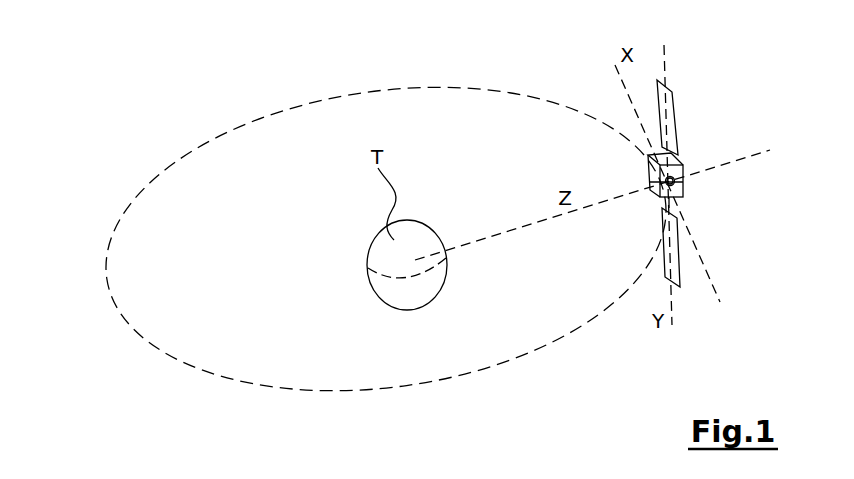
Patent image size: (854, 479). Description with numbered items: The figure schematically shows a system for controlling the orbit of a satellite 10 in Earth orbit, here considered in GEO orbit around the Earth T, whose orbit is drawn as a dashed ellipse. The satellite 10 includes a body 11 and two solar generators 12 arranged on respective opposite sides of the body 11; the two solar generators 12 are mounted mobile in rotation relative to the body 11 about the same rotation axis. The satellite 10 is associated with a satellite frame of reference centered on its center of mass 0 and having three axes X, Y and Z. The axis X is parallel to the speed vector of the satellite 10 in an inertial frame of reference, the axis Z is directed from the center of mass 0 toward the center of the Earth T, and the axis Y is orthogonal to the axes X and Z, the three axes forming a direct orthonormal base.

The satellite 10 is at (707, 199).
The body 11 is at (685, 157).
The solar generators 12 is at (675, 102).
The center of mass 0 is at (686, 185).